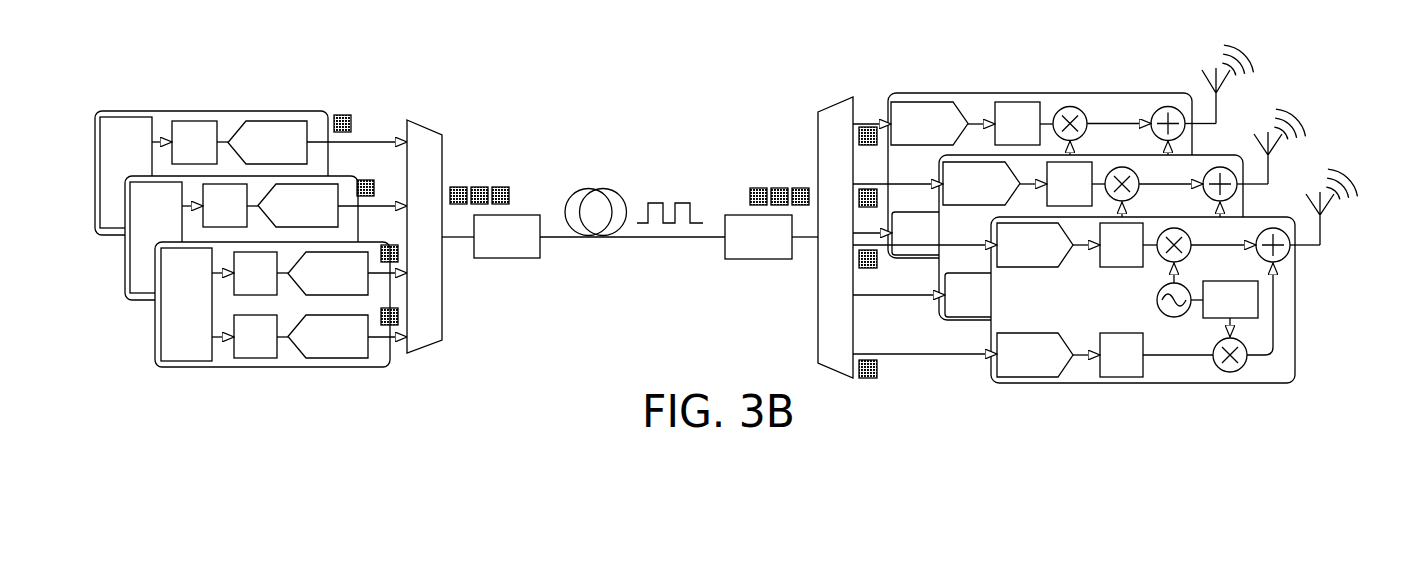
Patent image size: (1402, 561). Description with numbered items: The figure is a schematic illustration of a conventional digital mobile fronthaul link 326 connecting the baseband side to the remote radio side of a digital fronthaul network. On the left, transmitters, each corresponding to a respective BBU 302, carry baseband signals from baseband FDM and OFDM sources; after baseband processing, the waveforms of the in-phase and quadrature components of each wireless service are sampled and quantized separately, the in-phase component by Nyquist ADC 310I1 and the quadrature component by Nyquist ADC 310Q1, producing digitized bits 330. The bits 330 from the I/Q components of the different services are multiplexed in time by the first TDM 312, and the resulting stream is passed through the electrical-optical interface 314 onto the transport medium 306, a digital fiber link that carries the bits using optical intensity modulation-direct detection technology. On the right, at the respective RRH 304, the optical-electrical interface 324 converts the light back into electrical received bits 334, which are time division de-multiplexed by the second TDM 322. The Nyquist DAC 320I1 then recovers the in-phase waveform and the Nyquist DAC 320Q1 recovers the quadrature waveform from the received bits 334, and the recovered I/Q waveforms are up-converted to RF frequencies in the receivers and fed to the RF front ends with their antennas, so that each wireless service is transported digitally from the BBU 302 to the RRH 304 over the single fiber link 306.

The BBU 302 is at (288, 412).
The RRH 304 is at (1020, 439).
The transport medium 306 is at (700, 237).
The Nyquist analog-to-digital converter 310I1 is at (357, 297).
The Nyquist analog-to-digital converter 310Q1 is at (338, 367).
The first time division multiplexer/demultiplexer 312 is at (442, 161).
The electrical-optical interface 314 is at (505, 258).
The Nyquist digital-to-analog converter 320I1 is at (1030, 267).
The Nyquist digital-to-analog converter 320Q1 is at (1030, 333).
The second time division multiplexer/demultiplexer 322 is at (828, 102).
The optical-electrical interface 324 is at (767, 259).
The digital MFH link 326 is at (745, 125).
The bit stream 330 is at (390, 245).
The received bits 334 is at (868, 268).